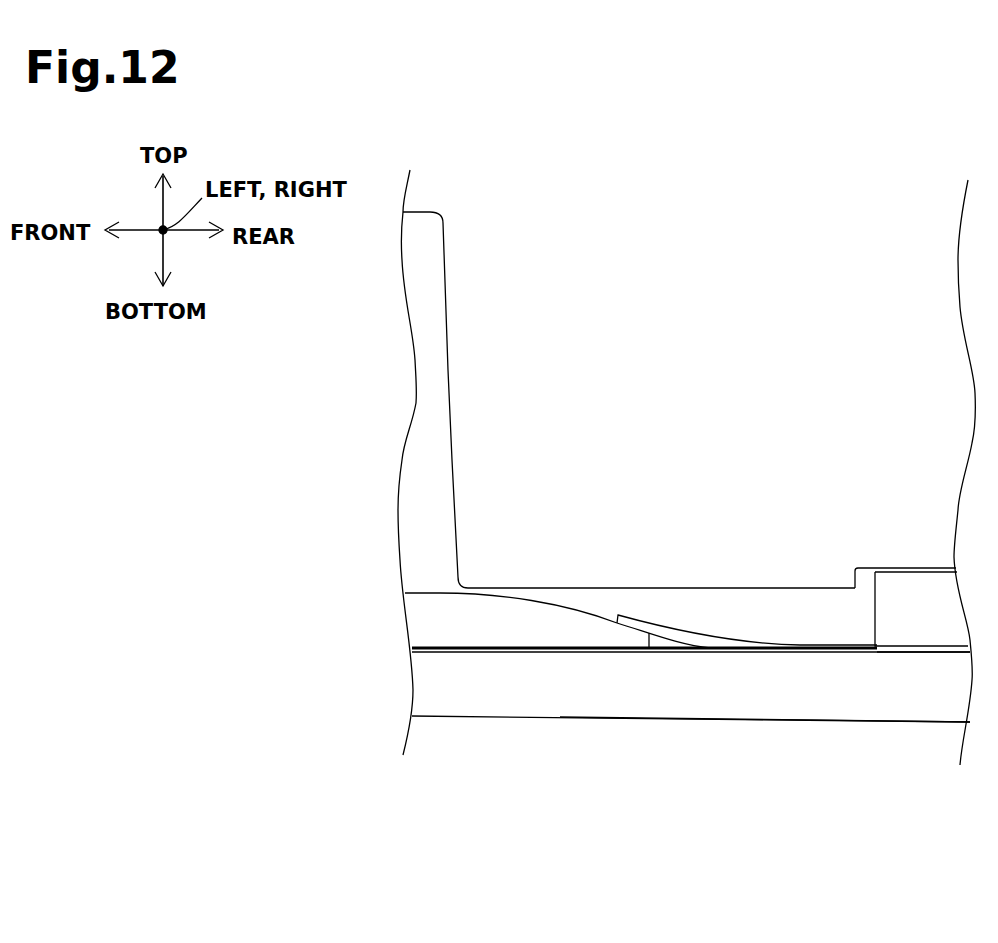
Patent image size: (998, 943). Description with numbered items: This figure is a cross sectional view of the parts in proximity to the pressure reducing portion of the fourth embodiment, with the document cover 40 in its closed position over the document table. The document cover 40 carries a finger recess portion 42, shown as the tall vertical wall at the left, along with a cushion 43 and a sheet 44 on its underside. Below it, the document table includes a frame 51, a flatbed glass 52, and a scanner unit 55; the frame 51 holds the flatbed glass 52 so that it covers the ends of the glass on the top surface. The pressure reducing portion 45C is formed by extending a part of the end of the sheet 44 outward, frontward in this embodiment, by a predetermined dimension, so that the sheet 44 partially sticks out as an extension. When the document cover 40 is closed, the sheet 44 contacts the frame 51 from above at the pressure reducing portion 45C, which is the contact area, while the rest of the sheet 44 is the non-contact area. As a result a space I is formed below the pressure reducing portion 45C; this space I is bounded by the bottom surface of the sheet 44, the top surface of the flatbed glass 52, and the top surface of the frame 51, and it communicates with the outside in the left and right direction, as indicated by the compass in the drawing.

The finger recess portion 42 is at (430, 318).
The document cover 40 is at (836, 509).
The cushion 43 is at (929, 624).
The pressure reducing portion 45C is at (680, 617).
The frame 51 is at (520, 625).
The space I is at (662, 643).
The flatbed glass 52 is at (808, 701).
The scanner unit 55 is at (808, 776).
The sheet 44 is at (917, 650).